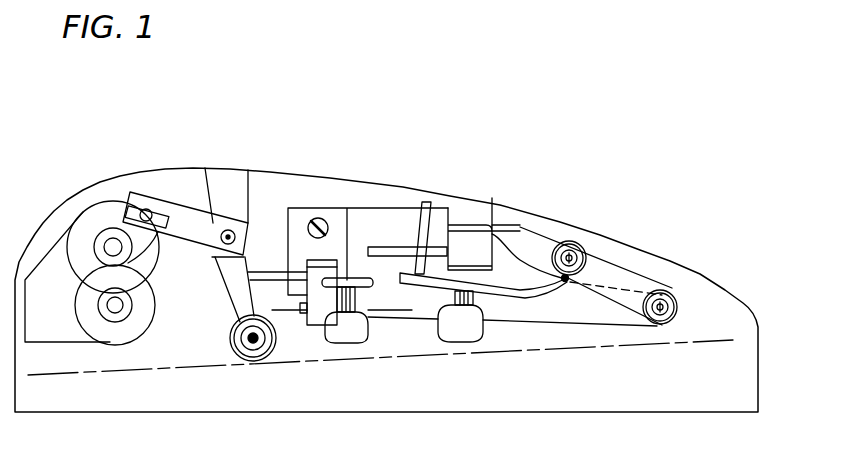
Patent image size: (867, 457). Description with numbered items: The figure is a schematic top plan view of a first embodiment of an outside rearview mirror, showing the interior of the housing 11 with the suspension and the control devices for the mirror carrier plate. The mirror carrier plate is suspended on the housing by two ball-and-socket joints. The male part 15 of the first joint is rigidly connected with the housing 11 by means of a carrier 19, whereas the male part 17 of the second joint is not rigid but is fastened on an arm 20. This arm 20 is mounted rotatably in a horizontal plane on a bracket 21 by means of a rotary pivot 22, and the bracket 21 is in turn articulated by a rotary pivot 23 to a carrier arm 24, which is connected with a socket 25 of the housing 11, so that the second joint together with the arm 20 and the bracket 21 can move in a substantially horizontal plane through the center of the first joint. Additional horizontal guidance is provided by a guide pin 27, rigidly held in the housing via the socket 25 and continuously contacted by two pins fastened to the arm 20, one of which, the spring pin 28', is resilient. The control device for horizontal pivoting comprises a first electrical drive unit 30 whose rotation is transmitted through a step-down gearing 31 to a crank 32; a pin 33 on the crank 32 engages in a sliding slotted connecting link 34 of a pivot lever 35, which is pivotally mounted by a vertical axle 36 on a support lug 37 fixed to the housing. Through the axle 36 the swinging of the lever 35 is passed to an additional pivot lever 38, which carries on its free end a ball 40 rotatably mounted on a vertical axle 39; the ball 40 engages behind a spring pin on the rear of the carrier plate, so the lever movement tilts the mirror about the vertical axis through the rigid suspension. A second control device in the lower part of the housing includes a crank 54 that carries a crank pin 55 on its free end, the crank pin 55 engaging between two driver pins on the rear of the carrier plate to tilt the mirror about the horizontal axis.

The housing 11 is at (298, 171).
The male part 15 is at (345, 333).
The male part 17 is at (462, 328).
The carrier 19 is at (370, 280).
The arm 20 is at (553, 293).
The bracket 21 is at (620, 283).
The rotary pivot 22 is at (667, 296).
The rotary pivot 23 is at (569, 256).
The carrier arm 24 is at (527, 247).
The socket 25 is at (470, 216).
The guide pin 27 is at (388, 246).
The spring pin 28' is at (435, 197).
The first electrical drive unit 30 is at (110, 328).
The step-down gearing 31 is at (85, 237).
The crank 32 is at (117, 232).
The pin 33 is at (146, 209).
The sliding slotted connecting link 34 is at (158, 210).
The pivot lever 35 is at (187, 228).
The vertical axle 36 is at (234, 232).
The support lug 37 is at (223, 190).
The additional pivot lever 38 is at (238, 283).
The vertical axle 39 is at (272, 352).
The ball 40 is at (250, 347).
The crank 54 is at (317, 302).
The crank pin 55 is at (270, 271).